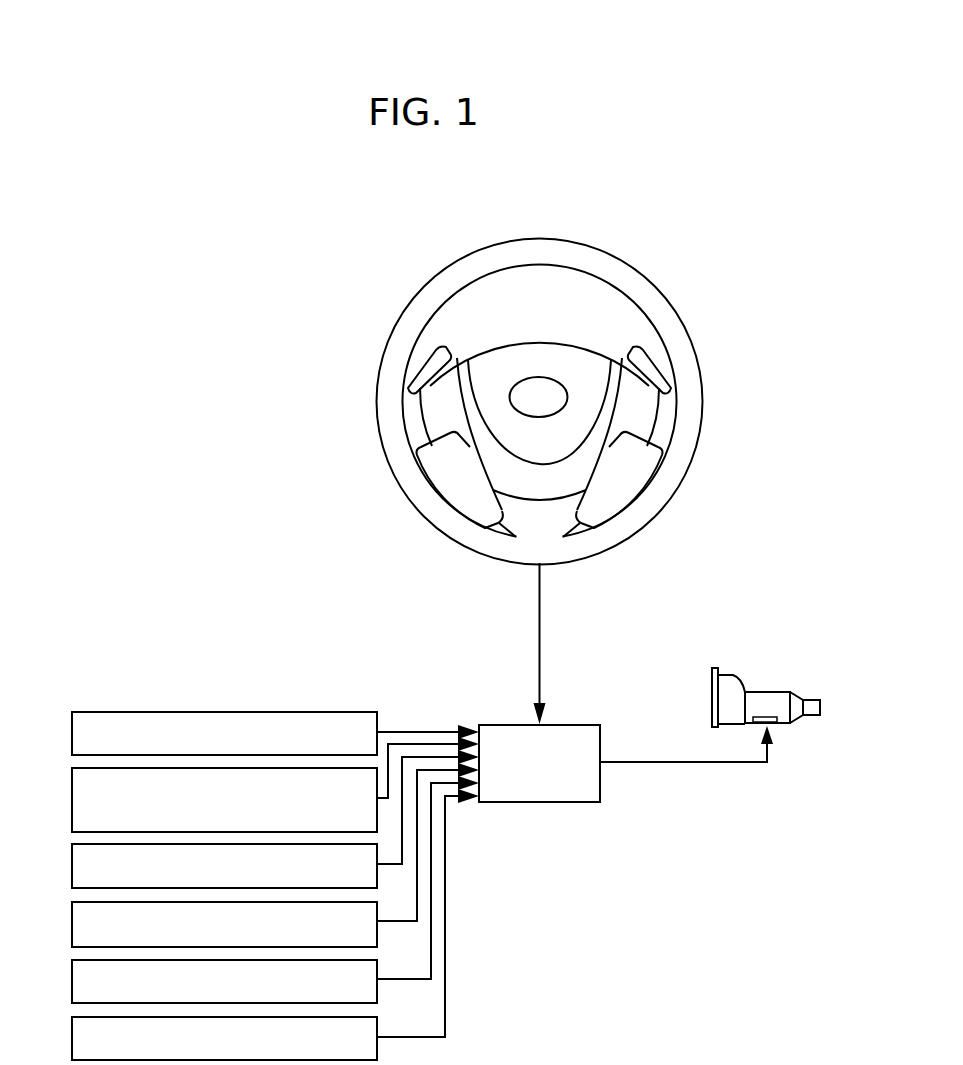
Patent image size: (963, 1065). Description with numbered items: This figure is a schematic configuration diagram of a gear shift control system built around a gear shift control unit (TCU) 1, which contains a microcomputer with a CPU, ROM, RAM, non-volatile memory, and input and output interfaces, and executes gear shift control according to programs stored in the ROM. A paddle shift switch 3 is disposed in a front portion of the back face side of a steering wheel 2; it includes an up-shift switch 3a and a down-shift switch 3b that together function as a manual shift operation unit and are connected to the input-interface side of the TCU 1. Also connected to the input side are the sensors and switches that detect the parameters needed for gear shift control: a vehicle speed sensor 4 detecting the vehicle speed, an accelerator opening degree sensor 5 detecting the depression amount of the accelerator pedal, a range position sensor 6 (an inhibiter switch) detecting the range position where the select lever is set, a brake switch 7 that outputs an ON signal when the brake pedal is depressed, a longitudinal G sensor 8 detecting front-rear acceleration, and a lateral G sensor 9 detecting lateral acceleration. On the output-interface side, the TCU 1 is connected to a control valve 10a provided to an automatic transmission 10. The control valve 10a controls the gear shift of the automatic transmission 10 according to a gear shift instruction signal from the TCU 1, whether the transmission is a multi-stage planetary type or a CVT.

The gear shift control unit (TCU) 1 is at (542, 804).
The steering wheel 2 is at (623, 263).
The paddle shift switch 3 is at (305, 325).
The up-shift switch 3a is at (630, 345).
The down-shift switch 3b is at (425, 370).
The vehicle speed sensor 4 is at (73, 733).
The accelerator opening degree sensor 5 is at (73, 800).
The range position sensor (inhibiter switch) 6 is at (73, 866).
The brake switch 7 is at (73, 924).
The longitudinal acceleration (longitudinal G) sensor 8 is at (73, 981).
The lateral acceleration (lateral G) sensor 9 is at (73, 1038).
The automatic transmission 10 is at (766, 666).
The control valve 10a is at (763, 713).